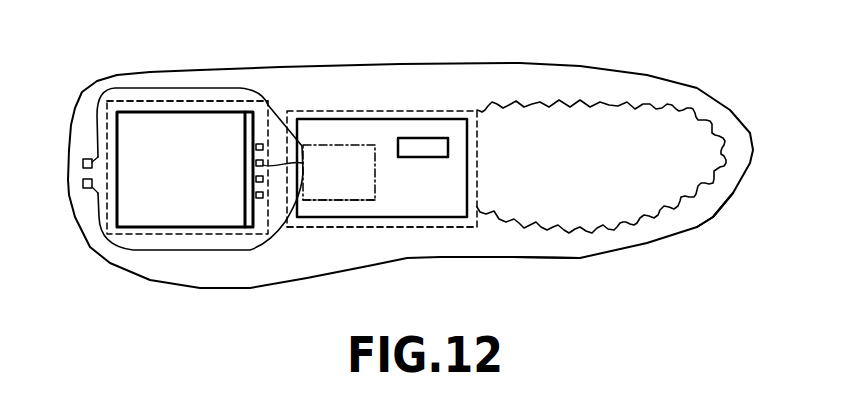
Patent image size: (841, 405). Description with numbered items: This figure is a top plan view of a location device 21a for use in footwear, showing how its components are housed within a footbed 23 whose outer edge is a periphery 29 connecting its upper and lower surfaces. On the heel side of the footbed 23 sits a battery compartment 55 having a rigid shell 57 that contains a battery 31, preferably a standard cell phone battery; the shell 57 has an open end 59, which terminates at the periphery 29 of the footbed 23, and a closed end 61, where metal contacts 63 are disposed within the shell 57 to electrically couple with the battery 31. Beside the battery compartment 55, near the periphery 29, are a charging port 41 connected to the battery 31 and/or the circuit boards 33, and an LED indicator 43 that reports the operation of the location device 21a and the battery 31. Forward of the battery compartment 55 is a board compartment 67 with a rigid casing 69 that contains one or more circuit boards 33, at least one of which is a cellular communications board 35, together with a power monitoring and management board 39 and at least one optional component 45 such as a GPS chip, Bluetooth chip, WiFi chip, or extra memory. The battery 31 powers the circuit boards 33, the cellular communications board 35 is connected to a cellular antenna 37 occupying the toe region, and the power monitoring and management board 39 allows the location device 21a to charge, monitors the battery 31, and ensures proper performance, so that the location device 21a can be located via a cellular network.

The location device 21a is at (551, 269).
The footbed 23 is at (128, 261).
The periphery 29 is at (693, 228).
The battery 31 is at (173, 213).
The circuit boards 33 is at (322, 202).
The cellular communications board 35 is at (340, 143).
The cellular antenna 37 is at (623, 101).
The power monitoring and management board 39 is at (440, 218).
The charging port 41 is at (87, 186).
The LED indicator 43 is at (85, 160).
The optional component 45 is at (422, 138).
The battery compartment 55 is at (218, 109).
The rigid shell 57 is at (182, 106).
The open end 59 is at (97, 112).
The closed end 61 is at (275, 100).
The metal contacts 63 is at (268, 235).
The board compartment 67 is at (474, 229).
The rigid casing 69 is at (388, 226).